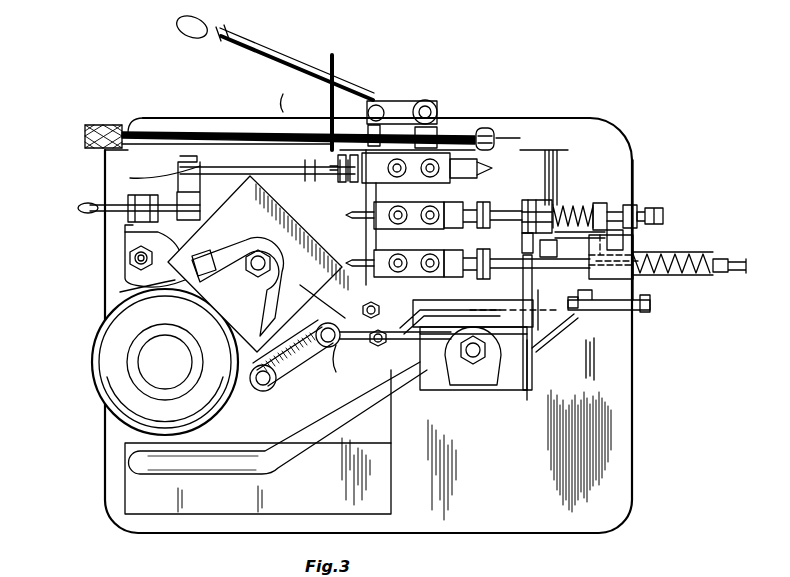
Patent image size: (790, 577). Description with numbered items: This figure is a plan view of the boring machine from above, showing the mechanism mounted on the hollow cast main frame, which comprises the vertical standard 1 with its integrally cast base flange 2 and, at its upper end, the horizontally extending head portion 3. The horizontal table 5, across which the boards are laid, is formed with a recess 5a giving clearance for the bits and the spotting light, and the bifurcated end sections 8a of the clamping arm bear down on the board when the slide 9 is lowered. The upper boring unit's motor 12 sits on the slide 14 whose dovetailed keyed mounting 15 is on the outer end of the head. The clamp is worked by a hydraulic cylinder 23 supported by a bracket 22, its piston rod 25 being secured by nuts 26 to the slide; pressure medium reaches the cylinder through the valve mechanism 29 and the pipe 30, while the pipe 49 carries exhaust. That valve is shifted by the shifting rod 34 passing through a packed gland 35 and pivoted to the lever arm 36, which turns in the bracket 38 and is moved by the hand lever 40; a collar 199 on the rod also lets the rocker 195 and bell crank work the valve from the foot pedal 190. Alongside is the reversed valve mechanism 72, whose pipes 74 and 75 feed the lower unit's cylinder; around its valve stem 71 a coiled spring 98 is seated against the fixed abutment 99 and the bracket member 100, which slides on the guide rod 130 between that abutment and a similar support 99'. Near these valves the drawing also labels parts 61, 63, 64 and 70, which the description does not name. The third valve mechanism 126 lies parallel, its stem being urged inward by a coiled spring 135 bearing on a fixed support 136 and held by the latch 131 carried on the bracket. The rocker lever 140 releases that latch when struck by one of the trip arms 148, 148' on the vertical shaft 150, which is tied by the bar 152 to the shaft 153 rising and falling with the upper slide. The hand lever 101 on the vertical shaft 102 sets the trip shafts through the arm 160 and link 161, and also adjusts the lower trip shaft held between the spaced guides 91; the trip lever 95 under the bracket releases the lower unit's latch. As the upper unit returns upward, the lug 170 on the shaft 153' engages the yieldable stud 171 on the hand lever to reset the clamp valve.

The vertical standard 1 is at (546, 150).
The base flange 2 is at (625, 130).
The head portion 3 is at (258, 264).
The table 5 is at (380, 457).
The recess 5a is at (268, 420).
The end sections of clamping arm 8a is at (222, 458).
The slide 9 is at (538, 341).
The motor 12 is at (92, 369).
The slide 14 is at (120, 292).
The dovetailed keyed mounting 15 is at (125, 245).
The bracket 22 is at (538, 368).
The cylinder 23 is at (510, 392).
The piston rod 25 is at (473, 365).
The nuts 26 is at (448, 380).
The valve mechanism 29 is at (440, 140).
The pipe 30 is at (495, 140).
The shifting rod 34 is at (247, 132).
The packed gland 35 is at (340, 181).
The lever arm 36 is at (178, 132).
The bracket 38 is at (178, 182).
The hand lever 40 is at (128, 200).
The pipe 49 is at (493, 170).
The bar 61 is at (633, 313).
The block 63 is at (655, 306).
The lever 64 is at (617, 303).
The stop 70 is at (630, 205).
The valve stem 71 is at (508, 212).
The valve mechanism 72 is at (440, 185).
The pipe 74 is at (410, 222).
The pipe 75 is at (372, 232).
The spaced guides 91 is at (327, 290).
The trip lever 95 is at (588, 328).
The coiled spring 98 is at (566, 206).
The fixed abutment 99 is at (556, 191).
The support 99' is at (643, 251).
The bracket member 100 is at (634, 175).
The hand lever 101 is at (262, 60).
The vertical shaft 102 is at (430, 100).
The valve mechanism 126 is at (465, 250).
The guide rod 130 is at (663, 214).
The latch 131 is at (548, 278).
The coiled spring 135 is at (690, 256).
The fixed support 136 is at (686, 276).
The rocker lever 140 is at (433, 340).
The trip arm 148 is at (353, 303).
The trip arm 148' is at (395, 356).
The vertical shaft 150 is at (336, 372).
The bar 152 is at (290, 392).
The shaft 153 is at (252, 388).
The shaft 153' is at (98, 259).
The arm 160 is at (390, 114).
The link 161 is at (334, 100).
The lug 170 is at (115, 210).
The yieldable stud 171 is at (128, 180).
The foot pedal 190 is at (84, 136).
The rocker 195 is at (511, 110).
The collar 199 is at (285, 92).